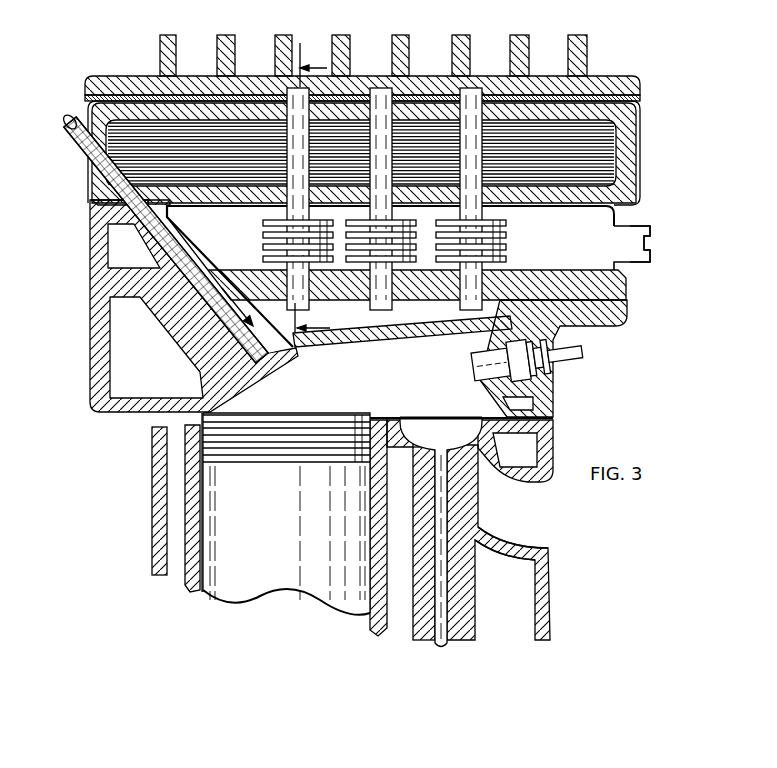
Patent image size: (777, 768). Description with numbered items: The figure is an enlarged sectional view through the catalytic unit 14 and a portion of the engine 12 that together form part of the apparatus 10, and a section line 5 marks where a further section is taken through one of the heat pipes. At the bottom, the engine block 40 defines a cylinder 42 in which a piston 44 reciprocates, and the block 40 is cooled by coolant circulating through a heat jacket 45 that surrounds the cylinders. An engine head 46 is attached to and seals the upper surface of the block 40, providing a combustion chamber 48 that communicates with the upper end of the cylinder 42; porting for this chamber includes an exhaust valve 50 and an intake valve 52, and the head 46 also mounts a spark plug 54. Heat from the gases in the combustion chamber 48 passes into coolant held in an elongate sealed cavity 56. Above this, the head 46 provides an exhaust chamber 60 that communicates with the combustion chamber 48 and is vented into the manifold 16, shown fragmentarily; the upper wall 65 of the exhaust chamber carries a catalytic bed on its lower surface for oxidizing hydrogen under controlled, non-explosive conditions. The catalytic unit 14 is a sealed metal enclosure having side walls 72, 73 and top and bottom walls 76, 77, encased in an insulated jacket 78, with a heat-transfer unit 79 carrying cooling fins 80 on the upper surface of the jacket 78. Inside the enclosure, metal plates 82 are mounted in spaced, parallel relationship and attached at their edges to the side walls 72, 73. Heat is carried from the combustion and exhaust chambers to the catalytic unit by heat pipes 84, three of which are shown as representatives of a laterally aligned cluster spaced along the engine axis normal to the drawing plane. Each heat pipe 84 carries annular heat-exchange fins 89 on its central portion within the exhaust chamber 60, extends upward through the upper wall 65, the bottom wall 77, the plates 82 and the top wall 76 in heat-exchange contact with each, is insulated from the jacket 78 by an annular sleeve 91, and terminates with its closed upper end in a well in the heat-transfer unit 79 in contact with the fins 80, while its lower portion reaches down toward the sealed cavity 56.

The section line 5 is at (312, 188).
The apparatus 10 is at (600, 420).
The engine 12 is at (556, 596).
The catalytic unit 14 is at (645, 105).
The manifold 16 is at (648, 262).
The engine block 40 is at (505, 528).
The cylinder 42 is at (205, 595).
The piston 44 is at (245, 595).
The heat jacket 45 is at (175, 535).
The engine head 46 is at (92, 365).
The combustion chamber 48 is at (523, 383).
The exhaust valve 50 is at (123, 193).
The intake valve 52 is at (445, 645).
The spark plug 54 is at (548, 370).
The sealed cavity 56 is at (513, 290).
The exhaust chamber 60 is at (605, 325).
The upper wall 65 is at (590, 210).
The side wall 72 is at (82, 110).
The side wall 73 is at (622, 186).
The top wall 76 is at (357, 113).
The bottom wall 77 is at (533, 210).
The insulated jacket 78 is at (190, 92).
The heat-transfer unit 79 is at (600, 80).
The cooling fins 80 is at (520, 35).
The metal plates 82 is at (108, 160).
The heat pipes 84 is at (467, 310).
The annular heat-exchange fins 89 is at (438, 250).
The annular sleeve 91 is at (437, 90).